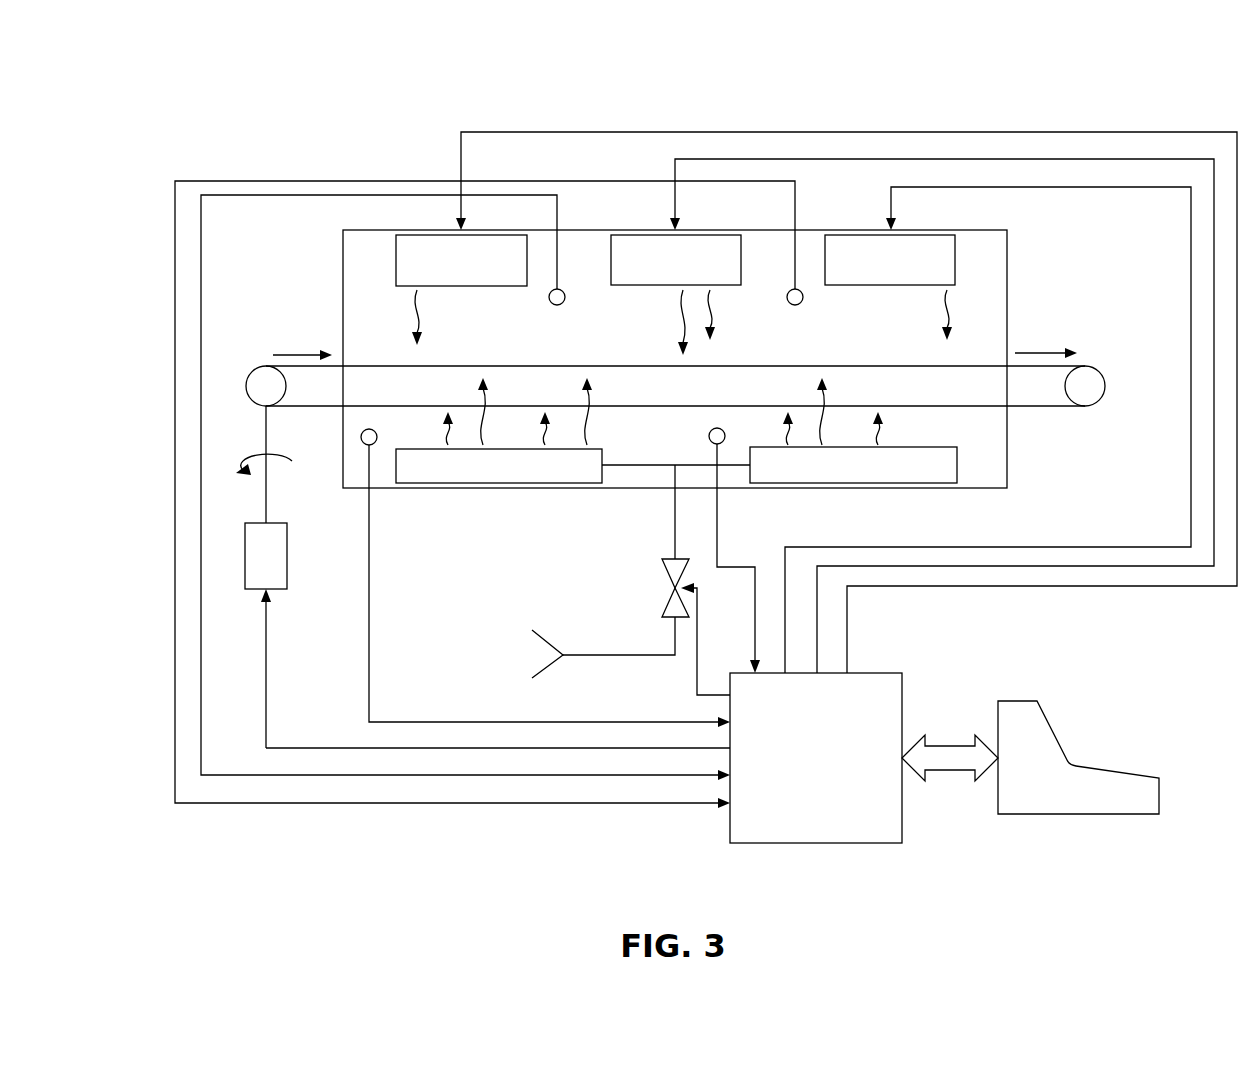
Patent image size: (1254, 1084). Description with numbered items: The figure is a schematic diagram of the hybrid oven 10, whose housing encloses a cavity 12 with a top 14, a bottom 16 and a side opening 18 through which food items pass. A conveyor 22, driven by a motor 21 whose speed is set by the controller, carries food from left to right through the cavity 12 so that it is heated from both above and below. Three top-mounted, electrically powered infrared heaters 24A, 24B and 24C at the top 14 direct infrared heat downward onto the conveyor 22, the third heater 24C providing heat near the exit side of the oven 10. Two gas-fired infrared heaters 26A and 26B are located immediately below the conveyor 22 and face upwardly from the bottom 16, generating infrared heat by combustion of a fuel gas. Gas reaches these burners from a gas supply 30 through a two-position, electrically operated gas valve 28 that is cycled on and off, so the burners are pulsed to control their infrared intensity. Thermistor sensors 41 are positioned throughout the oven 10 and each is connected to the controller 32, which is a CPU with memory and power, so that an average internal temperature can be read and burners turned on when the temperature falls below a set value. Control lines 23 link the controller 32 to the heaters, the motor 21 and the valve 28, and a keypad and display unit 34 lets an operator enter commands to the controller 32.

The hybrid oven 10 is at (220, 86).
The cavity 12 is at (977, 243).
The top 14 is at (352, 220).
The bottom 16 is at (457, 505).
The opening 18 is at (1033, 323).
The motor 21 is at (289, 555).
The conveyor 22 is at (485, 366).
The control lines 23 is at (224, 349).
The first electrically powered infrared heater 24A is at (484, 273).
The second electrically powered infrared heater 24B is at (698, 273).
The third electrically powered infrared heater 24C is at (912, 273).
The first gas-fired infrared heater 26A is at (522, 480).
The second gas-fired infrared heater 26B is at (876, 480).
The electrically operated gas valve 28 is at (663, 615).
The gas supply 30 is at (543, 645).
The controller 32 is at (787, 847).
The keypad and display unit 34 is at (1079, 818).
The thermistor sensor 41 is at (559, 306).